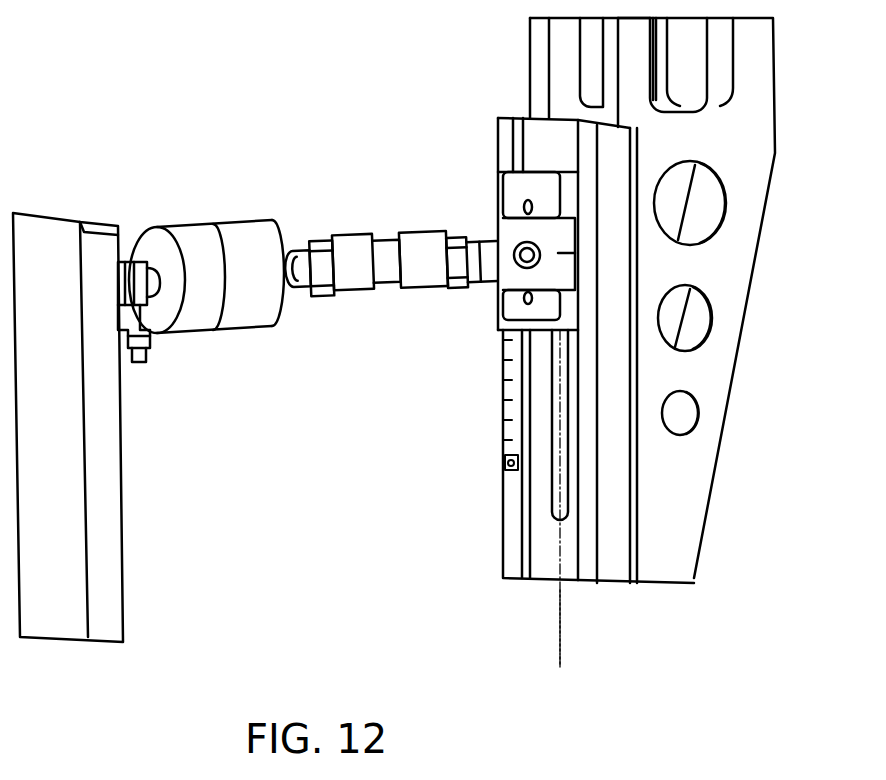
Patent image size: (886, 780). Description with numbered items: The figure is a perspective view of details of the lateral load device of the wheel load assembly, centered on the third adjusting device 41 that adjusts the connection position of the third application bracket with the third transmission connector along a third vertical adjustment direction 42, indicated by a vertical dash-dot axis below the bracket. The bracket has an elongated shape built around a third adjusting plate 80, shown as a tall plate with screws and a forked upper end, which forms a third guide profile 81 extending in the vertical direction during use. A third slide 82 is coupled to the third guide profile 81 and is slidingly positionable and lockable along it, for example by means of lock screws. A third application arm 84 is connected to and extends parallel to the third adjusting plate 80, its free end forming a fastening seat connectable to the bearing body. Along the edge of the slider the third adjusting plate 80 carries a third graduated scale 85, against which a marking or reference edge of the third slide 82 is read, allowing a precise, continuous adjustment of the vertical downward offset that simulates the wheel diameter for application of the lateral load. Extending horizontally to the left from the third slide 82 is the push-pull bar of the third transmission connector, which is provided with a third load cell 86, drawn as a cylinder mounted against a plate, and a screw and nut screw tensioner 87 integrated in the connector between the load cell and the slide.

The third adjusting device 41 is at (473, 200).
The third vertical adjustment direction 42 is at (562, 623).
The third adjusting plate 80 is at (612, 263).
The third guide profile 81 is at (523, 153).
The third slide 82 is at (547, 268).
The third application arm 84 is at (623, 47).
The third graduated scale 85 is at (502, 395).
The third load cell 86 is at (192, 307).
The screw and nut screw tensioner 87 is at (387, 270).